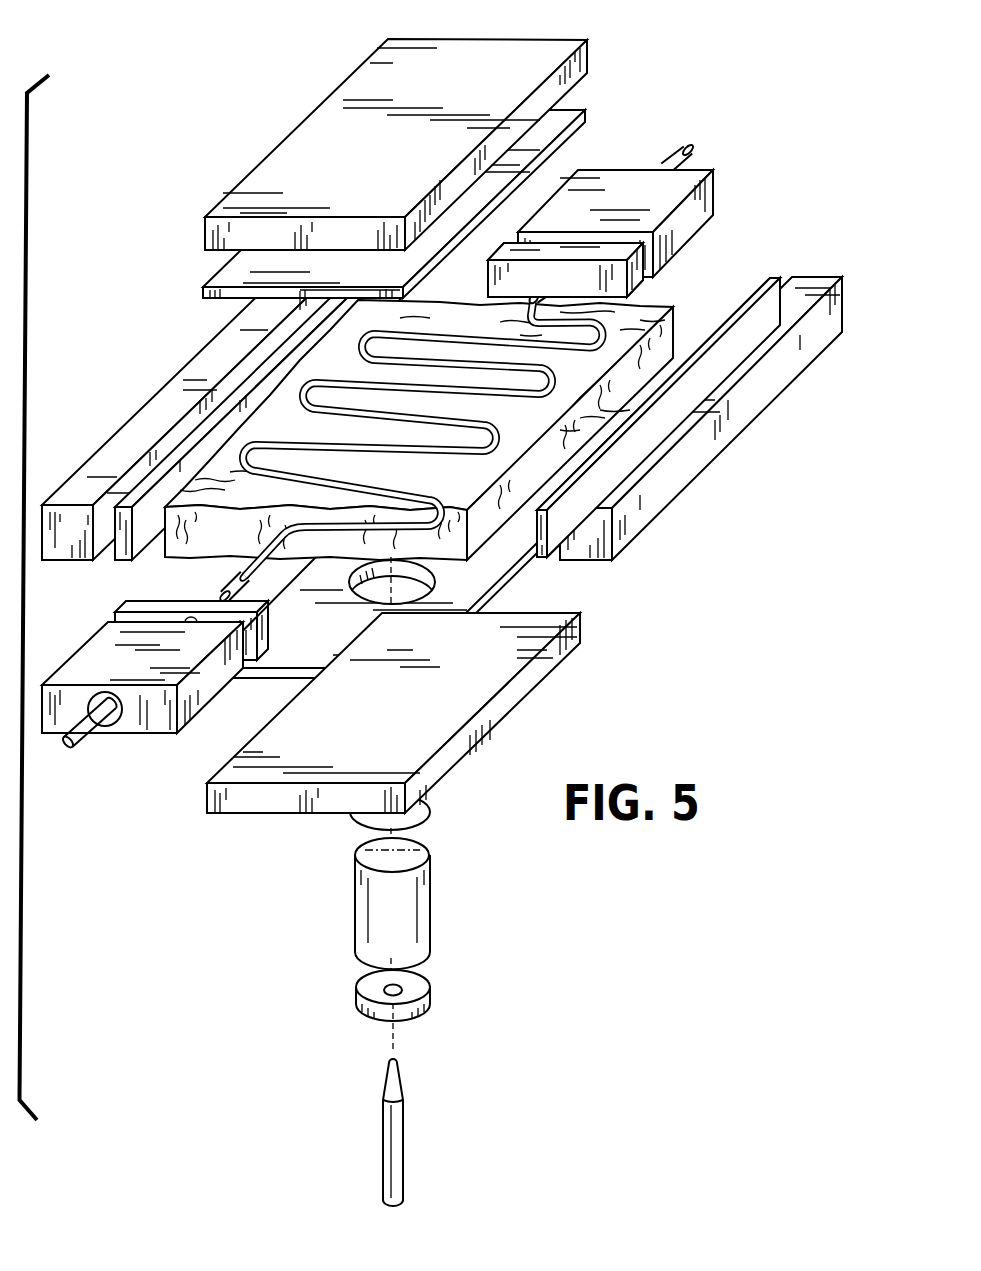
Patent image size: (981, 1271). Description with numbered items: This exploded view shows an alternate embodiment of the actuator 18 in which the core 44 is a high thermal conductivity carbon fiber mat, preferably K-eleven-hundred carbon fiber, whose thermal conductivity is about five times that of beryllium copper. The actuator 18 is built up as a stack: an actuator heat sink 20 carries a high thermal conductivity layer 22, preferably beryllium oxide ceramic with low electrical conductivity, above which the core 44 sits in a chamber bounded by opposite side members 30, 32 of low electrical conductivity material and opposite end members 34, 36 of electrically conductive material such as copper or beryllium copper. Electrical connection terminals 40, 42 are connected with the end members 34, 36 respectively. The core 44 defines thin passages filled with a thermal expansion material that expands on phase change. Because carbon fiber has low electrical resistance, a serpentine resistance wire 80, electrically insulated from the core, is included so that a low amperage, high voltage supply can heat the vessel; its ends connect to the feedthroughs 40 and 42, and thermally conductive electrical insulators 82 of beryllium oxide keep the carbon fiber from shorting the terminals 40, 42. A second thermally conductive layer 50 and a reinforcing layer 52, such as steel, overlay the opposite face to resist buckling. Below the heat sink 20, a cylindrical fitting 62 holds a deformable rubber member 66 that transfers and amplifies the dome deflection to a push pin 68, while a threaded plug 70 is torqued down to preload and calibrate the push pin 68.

The actuator 18 is at (608, 78).
The actuator heat sink 20 is at (507, 668).
The high thermal conductivity layer 22 is at (493, 572).
The side member 30 is at (202, 373).
The side member 32 is at (687, 462).
The end member 34 is at (137, 717).
The end member 36 is at (690, 175).
The electrical connection terminal 40 is at (77, 747).
The electrical connection terminal 42 is at (680, 150).
The core 44 is at (658, 332).
The second thermally conductive layer 50 is at (237, 273).
The reinforcing layer 52 is at (268, 177).
The cylindrical fitting 62 is at (433, 797).
The deformable resilient member 66 is at (415, 905).
The push pin 68 is at (392, 1148).
The threaded plug 70 is at (415, 987).
The resistance wire 80 is at (642, 303).
The thermally conductive electrical insulator 82 is at (173, 453).